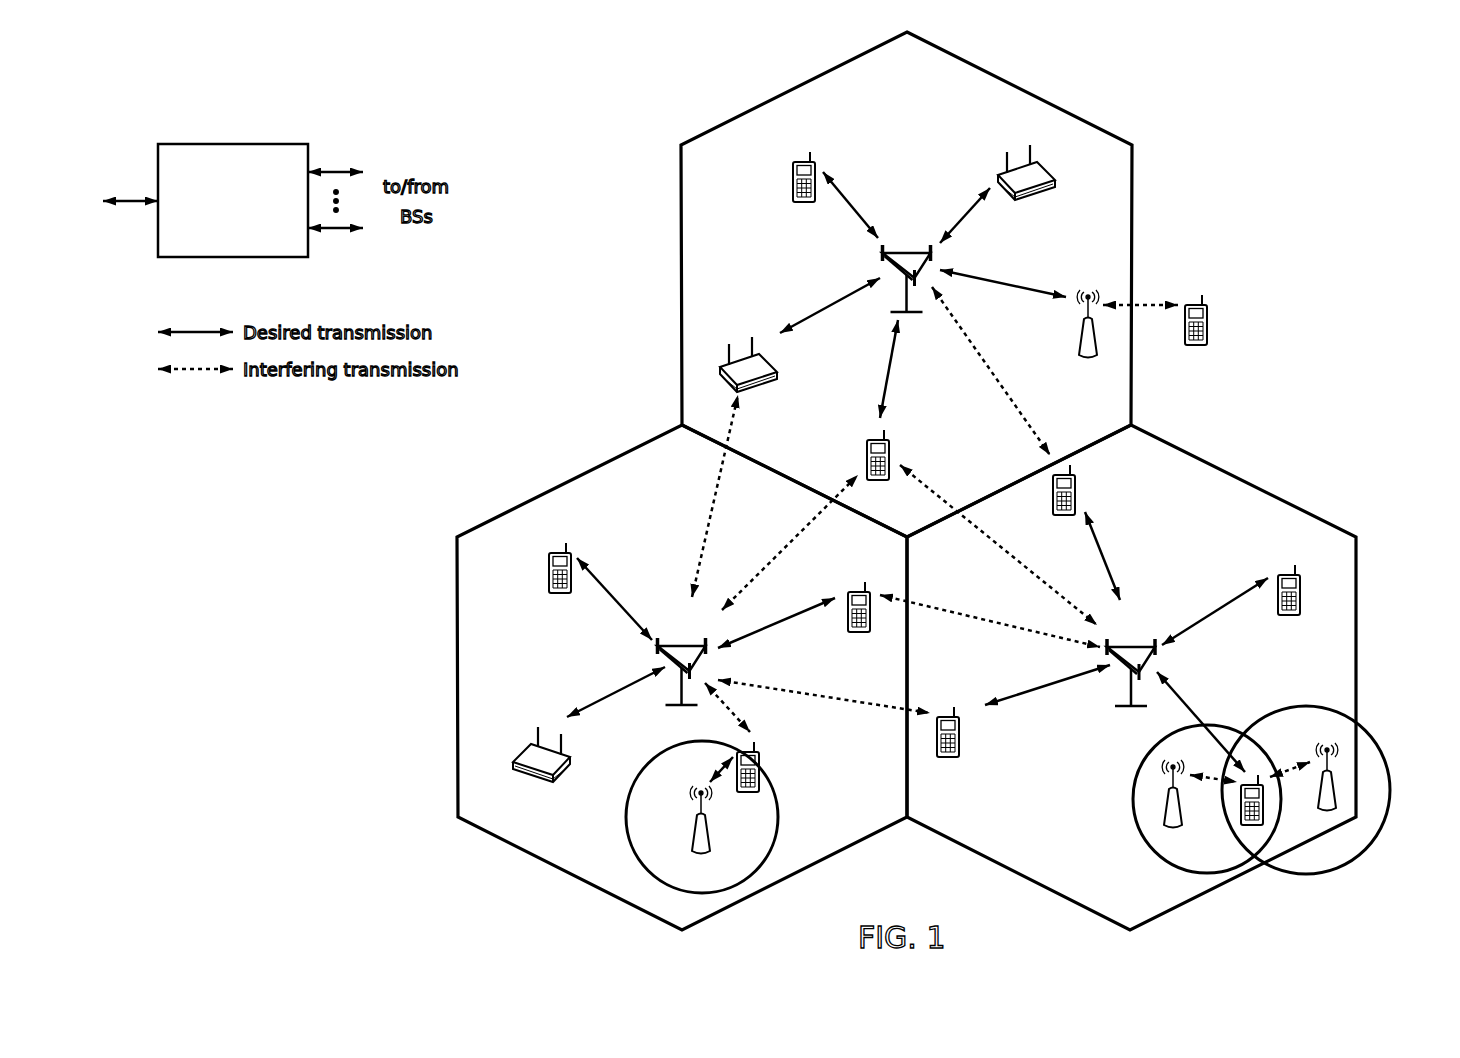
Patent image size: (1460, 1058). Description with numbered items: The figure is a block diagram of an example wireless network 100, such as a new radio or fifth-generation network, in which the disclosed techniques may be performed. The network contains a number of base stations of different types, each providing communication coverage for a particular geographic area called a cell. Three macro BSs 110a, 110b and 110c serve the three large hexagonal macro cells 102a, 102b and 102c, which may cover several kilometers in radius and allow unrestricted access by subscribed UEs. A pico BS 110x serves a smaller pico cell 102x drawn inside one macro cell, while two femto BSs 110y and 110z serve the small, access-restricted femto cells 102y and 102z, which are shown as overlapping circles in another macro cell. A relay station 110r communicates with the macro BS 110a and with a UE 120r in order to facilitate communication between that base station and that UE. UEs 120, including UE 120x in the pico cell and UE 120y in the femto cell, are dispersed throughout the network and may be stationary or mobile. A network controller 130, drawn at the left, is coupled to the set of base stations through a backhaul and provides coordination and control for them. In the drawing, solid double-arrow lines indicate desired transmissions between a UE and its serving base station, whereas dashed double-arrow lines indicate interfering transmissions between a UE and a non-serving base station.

The wireless network 100 is at (1288, 101).
The macro cell 102a is at (1019, 88).
The macro cell 102b is at (567, 481).
The macro cell 102c is at (1258, 465).
The pico cell 102x is at (650, 763).
The femto cell 102y is at (1141, 769).
The femto cell 102z is at (1318, 690).
The macro BS 110a is at (900, 251).
The macro BS 110b is at (682, 645).
The macro BS 110c is at (1131, 646).
The relay station 110r is at (1079, 345).
The pico BS 110x is at (710, 845).
The femto BS 110y is at (1182, 820).
The femto BS 110z is at (1336, 803).
The UE 120 is at (793, 172).
The UE 120r is at (1208, 340).
The UE 120x is at (759, 765).
The UE 120y is at (1240, 826).
The network controller 130 is at (230, 144).